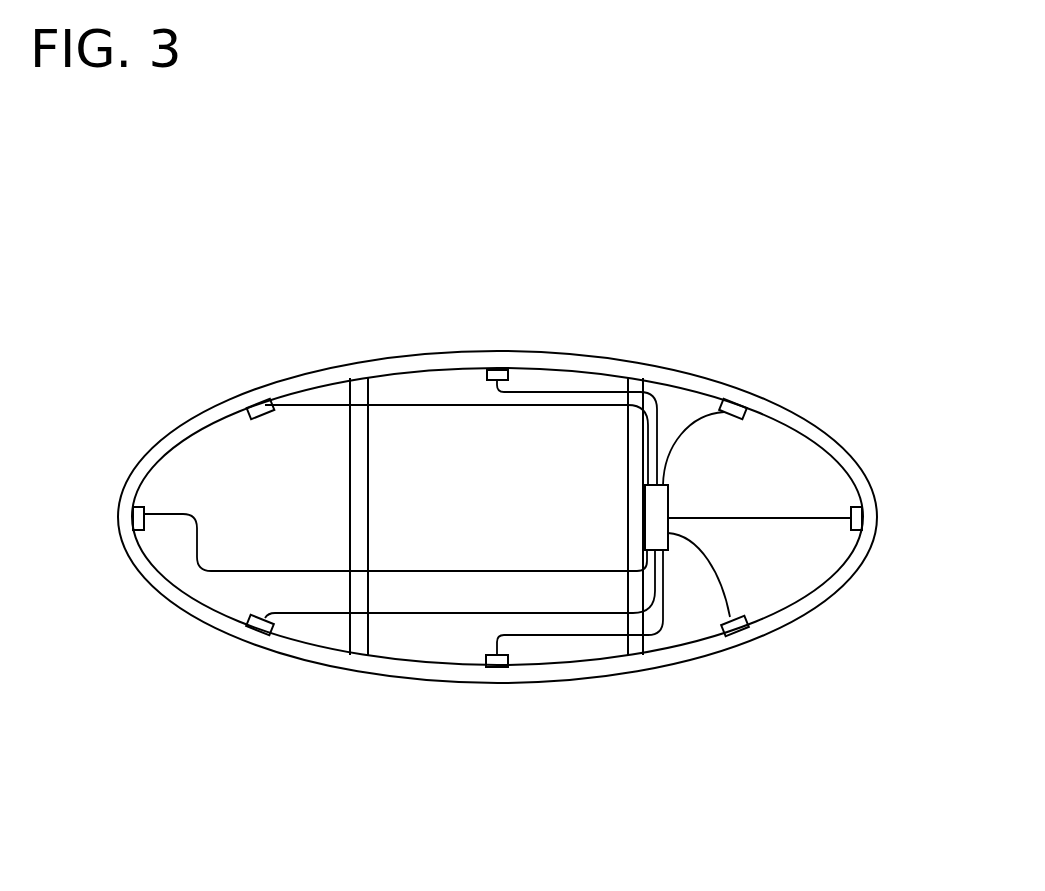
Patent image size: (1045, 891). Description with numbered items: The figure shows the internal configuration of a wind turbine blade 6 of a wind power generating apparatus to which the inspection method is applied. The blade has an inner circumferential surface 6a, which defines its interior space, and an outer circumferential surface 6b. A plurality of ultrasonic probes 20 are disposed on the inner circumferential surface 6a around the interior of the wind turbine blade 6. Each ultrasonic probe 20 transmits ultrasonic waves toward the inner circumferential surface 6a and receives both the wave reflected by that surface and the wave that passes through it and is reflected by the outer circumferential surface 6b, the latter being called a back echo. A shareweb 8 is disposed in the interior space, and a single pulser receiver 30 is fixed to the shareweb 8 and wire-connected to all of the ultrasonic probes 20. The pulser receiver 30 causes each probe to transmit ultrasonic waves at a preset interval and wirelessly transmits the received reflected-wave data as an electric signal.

The wind turbine blade 6 is at (186, 317).
The inner circumferential surface 6a is at (789, 420).
The outer circumferential surface 6b is at (668, 366).
The shareweb 8 is at (368, 483).
The ultrasonic probe 20 is at (133, 516).
The pulser receiver 30 is at (668, 492).